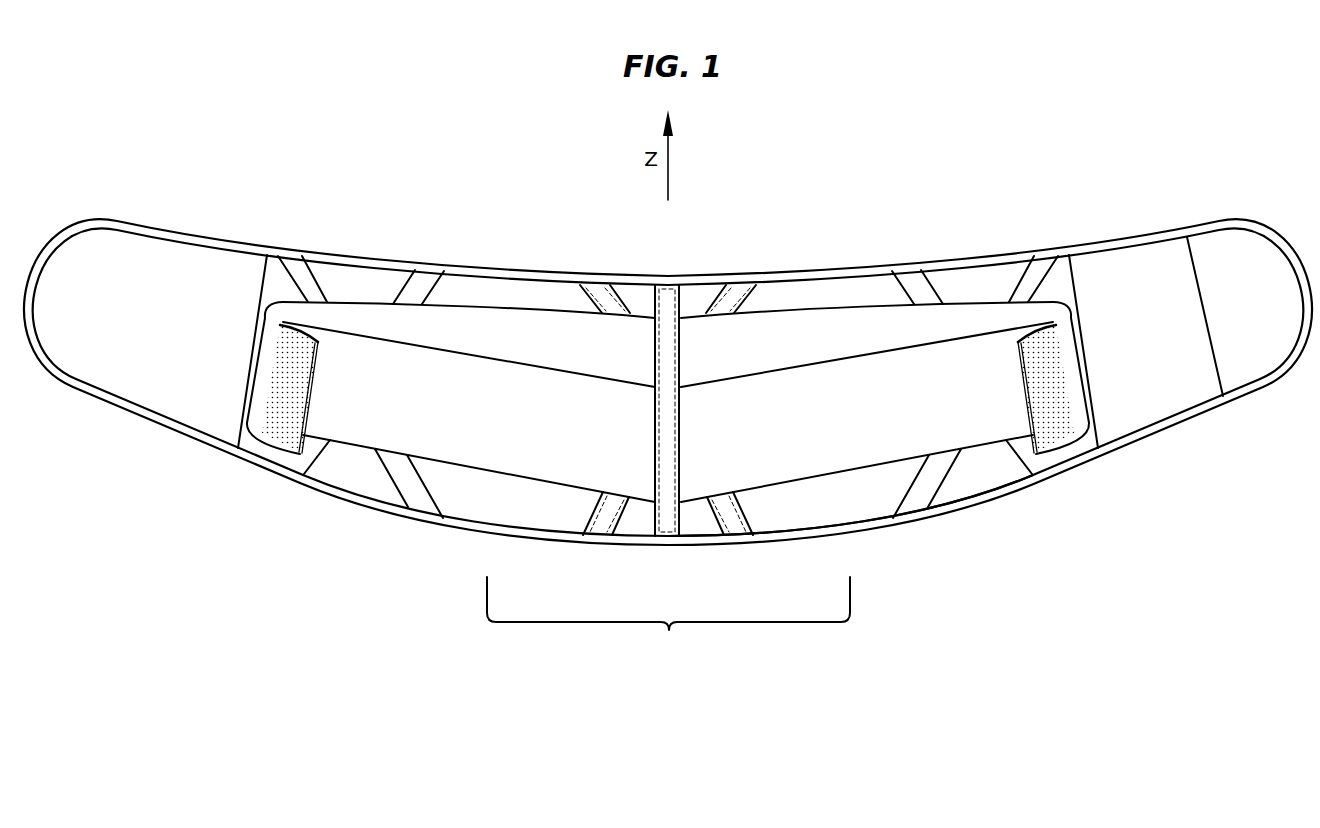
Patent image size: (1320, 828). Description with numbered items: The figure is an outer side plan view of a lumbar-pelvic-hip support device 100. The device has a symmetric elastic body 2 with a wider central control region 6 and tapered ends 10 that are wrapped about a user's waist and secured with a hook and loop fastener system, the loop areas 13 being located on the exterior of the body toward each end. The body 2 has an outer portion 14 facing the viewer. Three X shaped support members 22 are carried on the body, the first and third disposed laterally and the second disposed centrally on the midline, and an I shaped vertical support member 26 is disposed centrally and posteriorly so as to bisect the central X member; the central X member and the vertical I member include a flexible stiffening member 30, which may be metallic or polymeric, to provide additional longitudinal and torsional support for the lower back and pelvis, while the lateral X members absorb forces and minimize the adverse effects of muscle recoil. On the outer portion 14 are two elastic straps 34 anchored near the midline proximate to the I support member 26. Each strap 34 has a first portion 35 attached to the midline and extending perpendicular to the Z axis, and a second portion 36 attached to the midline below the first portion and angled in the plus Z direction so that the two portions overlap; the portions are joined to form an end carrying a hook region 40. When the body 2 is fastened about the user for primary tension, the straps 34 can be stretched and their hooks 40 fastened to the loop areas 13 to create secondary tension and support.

The elastic body 2 is at (860, 530).
The central control region 6 is at (668, 619).
The tapered ends 10 is at (70, 390).
The loop fastener areas 13 is at (207, 278).
The outer portion 14 is at (984, 474).
The X shaped support members 22 is at (422, 296).
The I shaped vertical support member 26 is at (667, 297).
The flexible stiffening member 30 is at (655, 514).
The elastic straps 34 is at (357, 407).
The first portion of strap 35 is at (547, 343).
The second portion of strap 36 is at (542, 456).
The hook region 40 is at (283, 408).
The lumbar-pelvic-hip support device 100 is at (824, 212).